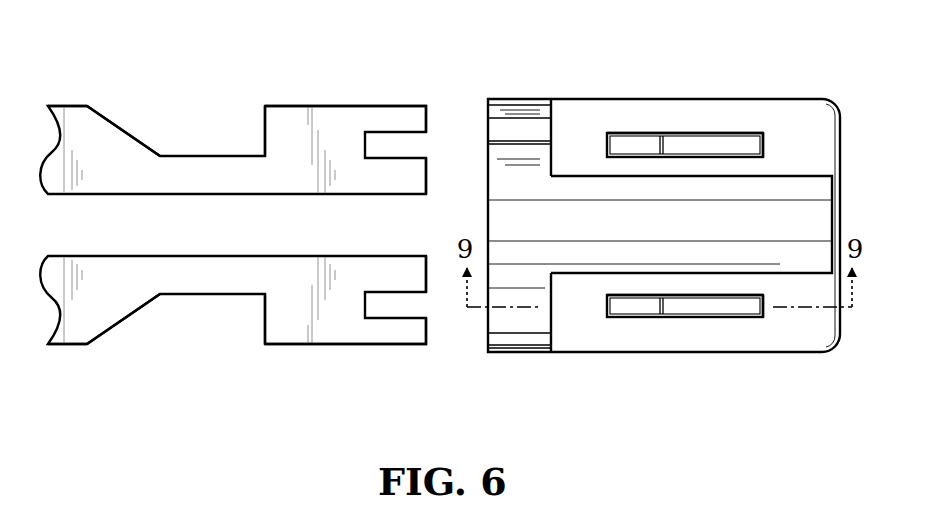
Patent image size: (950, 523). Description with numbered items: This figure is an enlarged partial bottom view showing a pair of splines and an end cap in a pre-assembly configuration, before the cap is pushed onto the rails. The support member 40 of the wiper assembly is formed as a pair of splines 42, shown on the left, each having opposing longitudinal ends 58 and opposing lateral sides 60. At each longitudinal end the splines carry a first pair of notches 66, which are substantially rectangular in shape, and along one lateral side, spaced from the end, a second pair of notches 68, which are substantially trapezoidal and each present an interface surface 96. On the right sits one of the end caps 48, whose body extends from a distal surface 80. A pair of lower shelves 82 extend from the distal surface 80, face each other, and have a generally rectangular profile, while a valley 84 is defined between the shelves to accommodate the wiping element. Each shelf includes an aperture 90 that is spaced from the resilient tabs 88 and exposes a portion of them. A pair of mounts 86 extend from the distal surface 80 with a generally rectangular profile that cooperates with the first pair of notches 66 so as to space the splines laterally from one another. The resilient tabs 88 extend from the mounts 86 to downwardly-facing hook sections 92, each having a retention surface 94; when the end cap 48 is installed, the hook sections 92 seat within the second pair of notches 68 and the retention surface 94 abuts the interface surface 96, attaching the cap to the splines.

The support member 40 is at (219, 225).
The splines 42 is at (67, 103).
The longitudinal ends 58 is at (429, 118).
The lateral sides 60 is at (312, 256).
The first pair of notches 66 is at (65, 194).
The second pair of notches 68 is at (209, 147).
The interface surface 96 is at (264, 129).
The end caps 48 is at (681, 219).
The distal surface 80 is at (841, 221).
The lower shelves 82 is at (787, 140).
The valley 84 is at (583, 178).
The mounts 86 is at (760, 150).
The resilient tabs 88 is at (703, 140).
The aperture 90 is at (606, 150).
The hook section 92 is at (630, 141).
The retention surface 94 is at (670, 142).